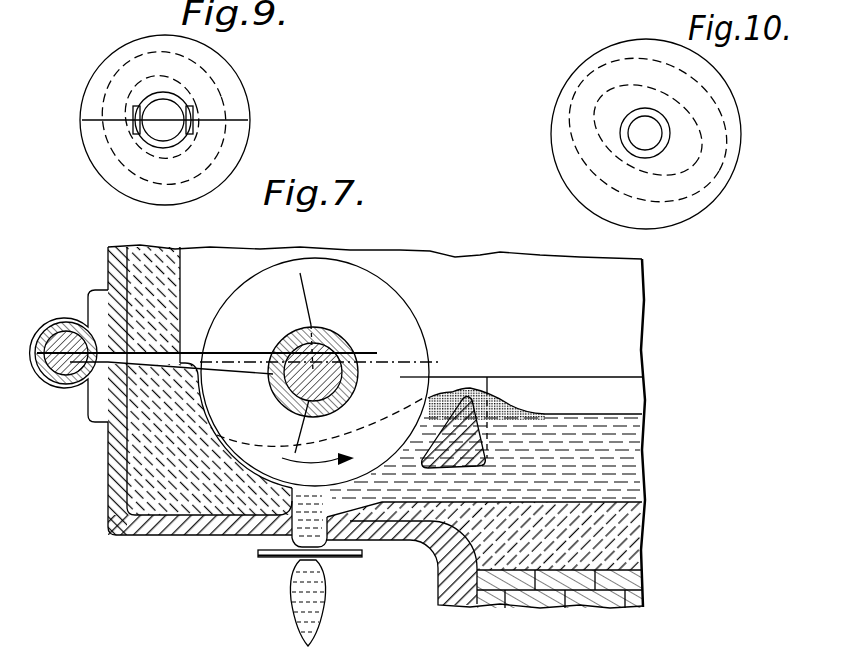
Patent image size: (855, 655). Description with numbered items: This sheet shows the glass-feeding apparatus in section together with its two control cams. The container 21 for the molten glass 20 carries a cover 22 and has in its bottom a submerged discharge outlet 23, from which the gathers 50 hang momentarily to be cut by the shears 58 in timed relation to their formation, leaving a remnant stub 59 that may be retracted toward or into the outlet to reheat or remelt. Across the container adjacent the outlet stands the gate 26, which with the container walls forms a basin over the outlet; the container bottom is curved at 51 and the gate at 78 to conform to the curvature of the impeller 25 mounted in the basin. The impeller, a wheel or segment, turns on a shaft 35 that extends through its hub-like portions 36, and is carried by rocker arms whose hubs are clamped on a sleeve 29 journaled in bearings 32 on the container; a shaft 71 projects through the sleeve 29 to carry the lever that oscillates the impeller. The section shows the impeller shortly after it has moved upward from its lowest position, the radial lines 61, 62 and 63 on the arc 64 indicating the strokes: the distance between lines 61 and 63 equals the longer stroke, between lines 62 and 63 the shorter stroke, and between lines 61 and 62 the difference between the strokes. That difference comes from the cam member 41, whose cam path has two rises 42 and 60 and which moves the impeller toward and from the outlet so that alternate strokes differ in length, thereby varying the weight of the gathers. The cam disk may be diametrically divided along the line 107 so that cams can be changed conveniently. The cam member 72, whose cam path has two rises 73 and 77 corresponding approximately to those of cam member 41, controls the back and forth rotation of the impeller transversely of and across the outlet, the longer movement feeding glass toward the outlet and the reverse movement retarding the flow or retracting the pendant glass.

In FIG. 7, the molten glass 20 is at (615, 414).
In FIG. 7, the container 21 is at (645, 545).
In FIG. 7, the cover 22 is at (645, 292).
In FIG. 7, the submerged discharge outlet 23 is at (283, 523).
In FIG. 7, the impeller 25 is at (327, 258).
In FIG. 7, the gate 26 is at (467, 410).
In FIG. 7, the sleeve 29 is at (60, 322).
In FIG. 7, the bearings 32 is at (93, 427).
In FIG. 7, the shaft 35 is at (330, 340).
In FIG. 7, the hub-like portions 36 is at (348, 340).
In FIG. 9, the cam member 41 is at (243, 88).
In FIG. 9, the cam rise 42 is at (102, 97).
In FIG. 7, the gathers 50 is at (291, 611).
In FIG. 7, the curved bottom 51 is at (197, 412).
In FIG. 7, the shears 58 is at (352, 560).
In FIG. 7, the remnant stub 59 is at (305, 546).
In FIG. 9, the cam rise 60 is at (230, 143).
In FIG. 7, the upper radial line 61 is at (233, 355).
In FIG. 7, the lower radial line 62 is at (437, 363).
In FIG. 7, the radial line 63 is at (400, 365).
In FIG. 7, the arc 64 is at (307, 300).
In FIG. 7, the shaft 71 is at (58, 387).
In FIG. 10, the cam member 72 is at (735, 100).
In FIG. 10, the cam rise 73 is at (707, 187).
In FIG. 10, the cam rise 77 is at (575, 127).
In FIG. 7, the curved portion of gate 78 is at (447, 417).
In FIG. 9, the dividing line 107 is at (95, 123).